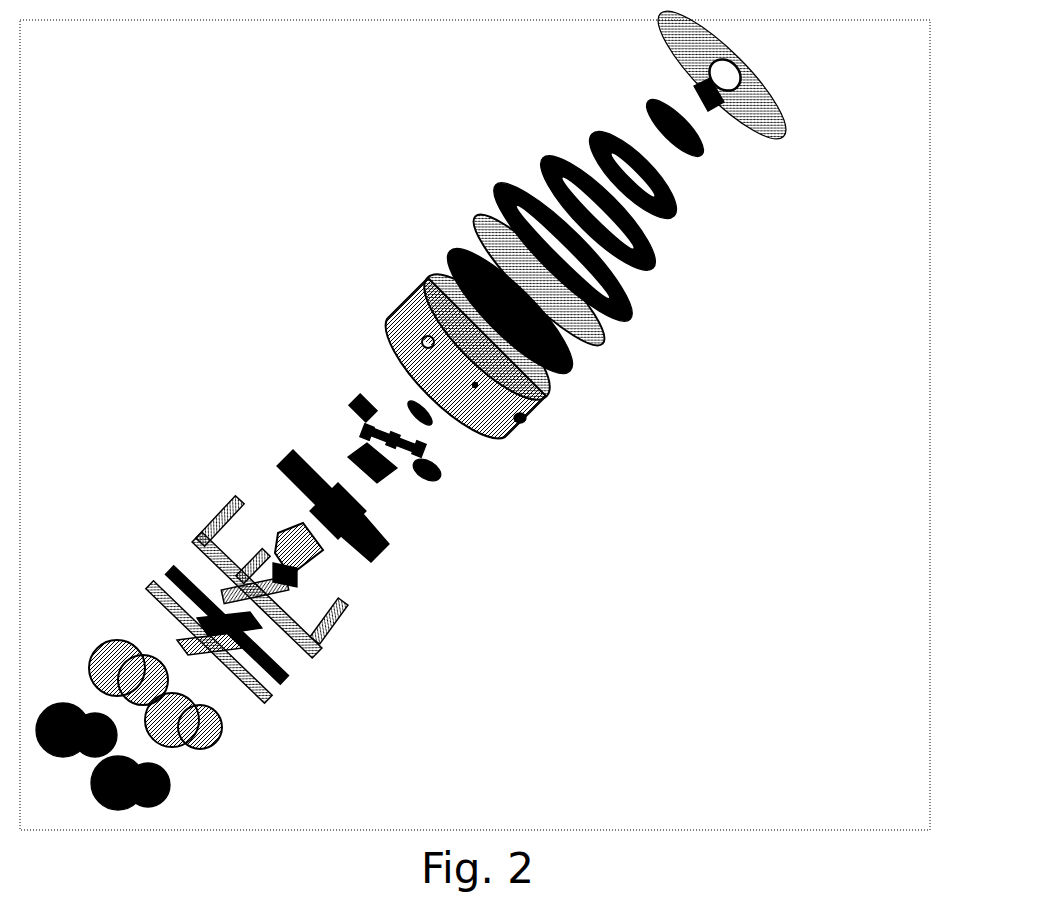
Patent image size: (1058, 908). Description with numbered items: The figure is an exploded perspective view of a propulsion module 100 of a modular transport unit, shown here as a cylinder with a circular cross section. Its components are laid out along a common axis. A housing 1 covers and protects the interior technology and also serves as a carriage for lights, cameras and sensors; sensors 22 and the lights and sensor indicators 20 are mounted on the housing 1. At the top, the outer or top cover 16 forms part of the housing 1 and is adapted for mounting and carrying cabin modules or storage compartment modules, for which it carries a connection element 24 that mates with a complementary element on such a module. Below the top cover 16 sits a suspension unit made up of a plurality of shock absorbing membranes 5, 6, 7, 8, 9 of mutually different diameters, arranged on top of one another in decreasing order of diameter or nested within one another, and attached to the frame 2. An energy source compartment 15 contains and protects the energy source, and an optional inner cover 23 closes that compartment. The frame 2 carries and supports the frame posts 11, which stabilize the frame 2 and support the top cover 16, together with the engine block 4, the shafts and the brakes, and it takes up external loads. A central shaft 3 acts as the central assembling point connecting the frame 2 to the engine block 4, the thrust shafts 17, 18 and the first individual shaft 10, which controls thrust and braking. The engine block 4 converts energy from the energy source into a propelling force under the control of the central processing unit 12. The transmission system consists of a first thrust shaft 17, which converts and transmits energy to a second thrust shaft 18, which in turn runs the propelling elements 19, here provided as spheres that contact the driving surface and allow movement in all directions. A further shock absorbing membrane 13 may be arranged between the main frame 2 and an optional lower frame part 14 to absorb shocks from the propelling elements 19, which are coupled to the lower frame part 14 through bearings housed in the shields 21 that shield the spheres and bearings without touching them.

The housing 1 is at (500, 433).
The frame 2 is at (318, 652).
The central shaft 3 is at (290, 525).
The engine block 4 is at (390, 484).
The shock absorbing membrane 5 is at (632, 307).
The shock absorbing membrane 6 is at (650, 262).
The shock absorbing membrane 7 is at (667, 215).
The shock absorbing membrane 8 is at (700, 153).
The shock absorbing membrane 9 is at (718, 108).
The first individual shaft 10 is at (385, 556).
The frame post 11 is at (343, 617).
The central processing unit 12 is at (432, 423).
The further shock absorbing membrane 13 is at (287, 676).
The lower frame part 14 is at (270, 703).
The energy source compartment 15 is at (568, 366).
The top cover 16 is at (790, 125).
The first thrust shaft 17 is at (352, 400).
The second thrust shaft 18 is at (440, 478).
The propelling elements 19 is at (172, 798).
The sensor indicators 20 is at (525, 420).
The shields 21 is at (225, 745).
The sensors 22 is at (398, 305).
The inner cover 23 is at (603, 337).
The connection element 24 is at (752, 73).
The propulsion module 100 is at (615, 606).